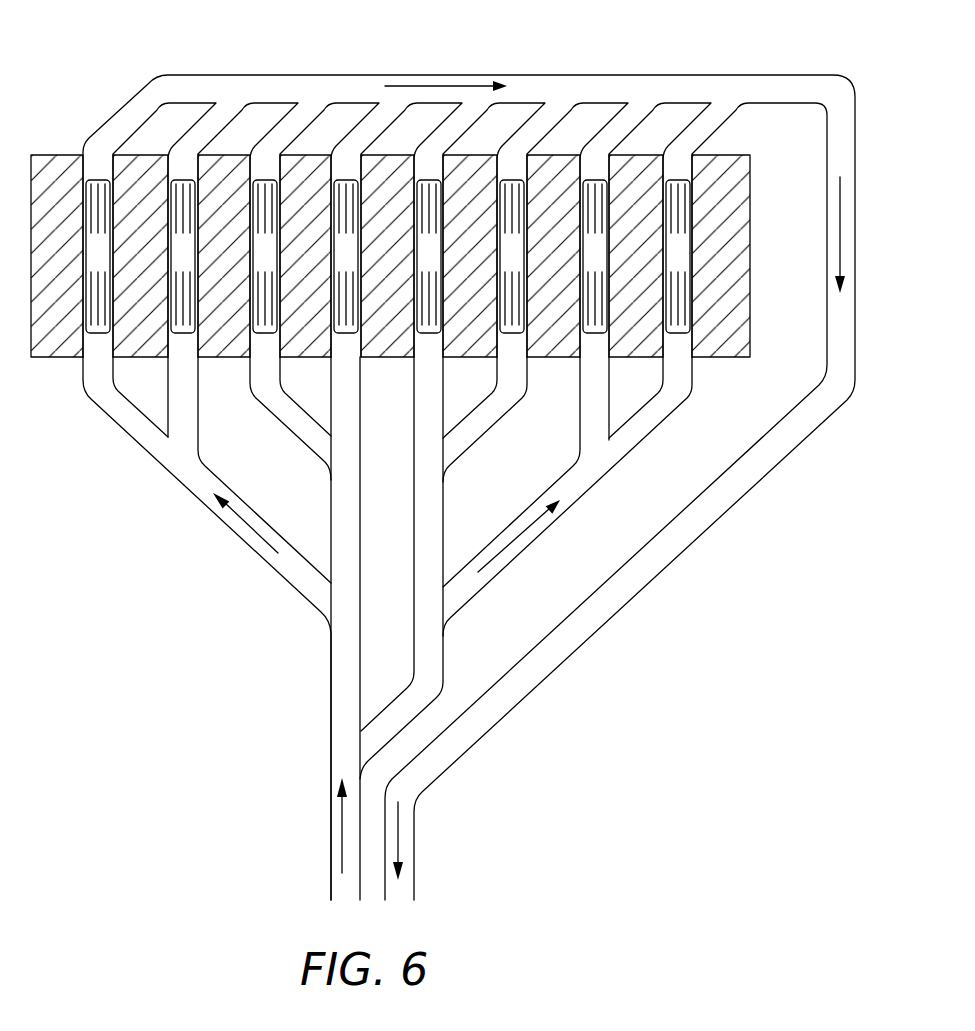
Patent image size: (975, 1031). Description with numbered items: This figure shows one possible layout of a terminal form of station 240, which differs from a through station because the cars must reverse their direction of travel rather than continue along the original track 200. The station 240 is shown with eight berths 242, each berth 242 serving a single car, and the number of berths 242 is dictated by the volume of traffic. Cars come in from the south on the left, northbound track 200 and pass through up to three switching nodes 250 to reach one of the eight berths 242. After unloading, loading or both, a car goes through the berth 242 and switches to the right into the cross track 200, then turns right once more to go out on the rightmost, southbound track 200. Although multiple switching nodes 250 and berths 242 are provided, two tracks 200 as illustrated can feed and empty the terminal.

The track 200 is at (843, 128).
The station 240 is at (43, 140).
The berth 242 is at (190, 318).
The switching node 250 is at (600, 457).